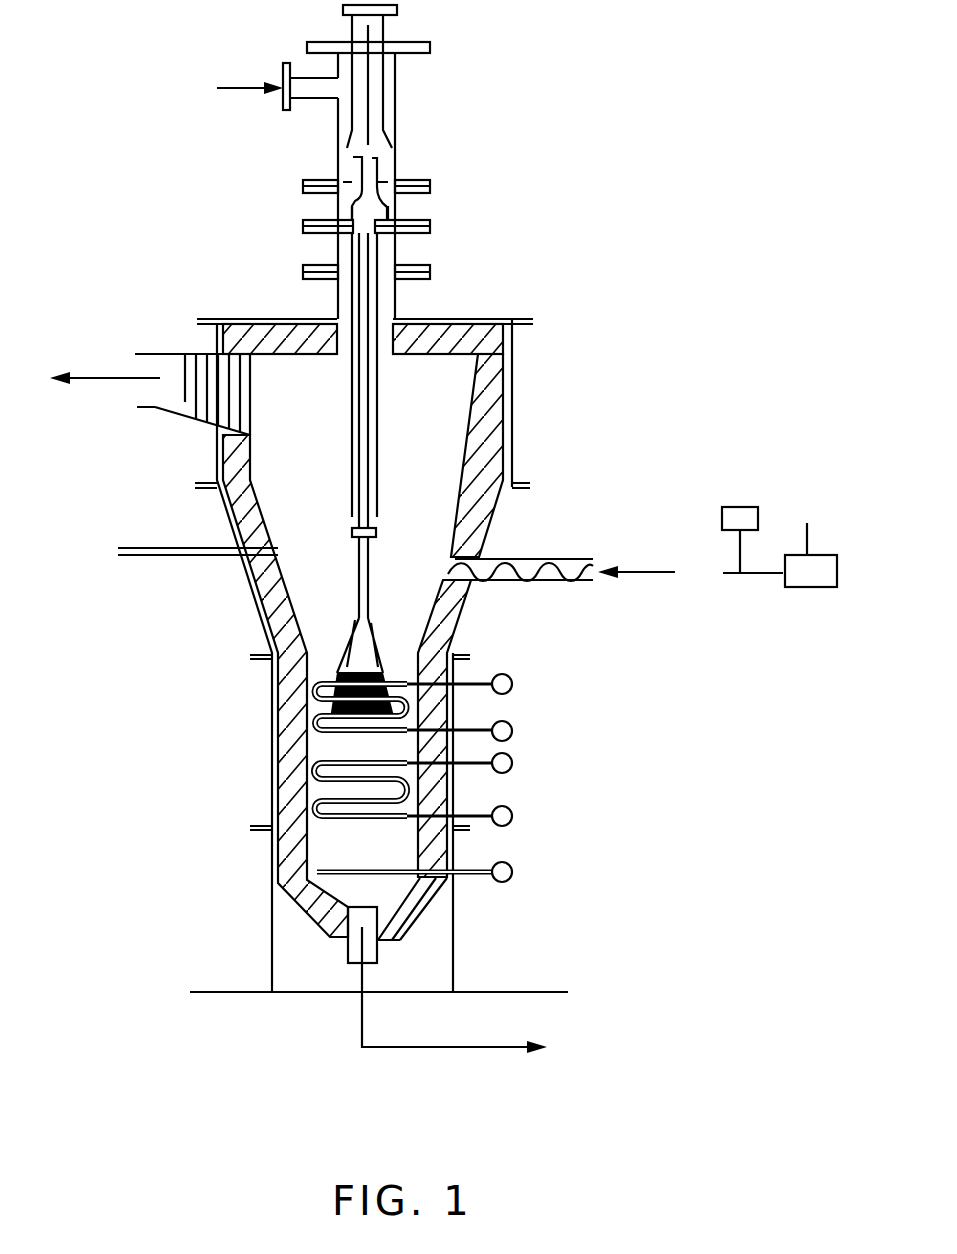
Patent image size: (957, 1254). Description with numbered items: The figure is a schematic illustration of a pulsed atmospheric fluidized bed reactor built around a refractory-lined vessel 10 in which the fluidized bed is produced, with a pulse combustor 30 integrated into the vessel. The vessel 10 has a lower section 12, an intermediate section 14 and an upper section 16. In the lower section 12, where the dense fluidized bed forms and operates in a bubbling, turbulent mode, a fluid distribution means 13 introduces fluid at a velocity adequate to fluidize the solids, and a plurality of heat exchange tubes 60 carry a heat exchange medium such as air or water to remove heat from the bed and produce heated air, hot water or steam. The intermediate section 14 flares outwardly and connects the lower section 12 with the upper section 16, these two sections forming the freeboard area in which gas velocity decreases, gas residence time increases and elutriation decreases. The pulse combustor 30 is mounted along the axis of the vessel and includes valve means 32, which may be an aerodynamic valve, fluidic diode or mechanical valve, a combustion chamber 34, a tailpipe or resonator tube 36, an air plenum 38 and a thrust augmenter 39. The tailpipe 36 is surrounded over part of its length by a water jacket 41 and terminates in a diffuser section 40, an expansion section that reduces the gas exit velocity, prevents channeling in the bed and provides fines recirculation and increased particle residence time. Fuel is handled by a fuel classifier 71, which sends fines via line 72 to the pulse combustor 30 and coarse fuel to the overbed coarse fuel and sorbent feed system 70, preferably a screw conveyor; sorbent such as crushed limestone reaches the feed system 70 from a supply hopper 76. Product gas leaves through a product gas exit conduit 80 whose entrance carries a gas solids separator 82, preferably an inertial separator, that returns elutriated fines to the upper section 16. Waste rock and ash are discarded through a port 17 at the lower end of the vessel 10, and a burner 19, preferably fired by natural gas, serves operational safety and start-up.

The refractory-lined vessel 10 is at (522, 371).
The lower section 12 is at (395, 843).
The fluid distribution means 13 is at (466, 878).
The intermediate section 14 is at (425, 536).
The upper section 16 is at (450, 370).
The port 17 is at (353, 955).
The burner 19 is at (150, 548).
The pulse combustor 30 is at (388, 176).
The valve means 32 is at (374, 158).
The combustion chamber 34 is at (353, 207).
The tailpipe 36 is at (371, 428).
The air plenum 38 is at (396, 110).
The thrust augmenter 39 is at (386, 139).
The diffuser section 40 is at (360, 653).
The water jacket 41 is at (378, 480).
The heat exchange tubes 60 is at (510, 691).
The overbed coarse fuel and sorbent feed system 70 is at (552, 579).
The fuel classifier 71 is at (837, 572).
The line 72 is at (368, 25).
The supply hopper 76 is at (722, 520).
The product gas exit conduit 80 is at (137, 407).
The gas solids separator 82 is at (183, 352).